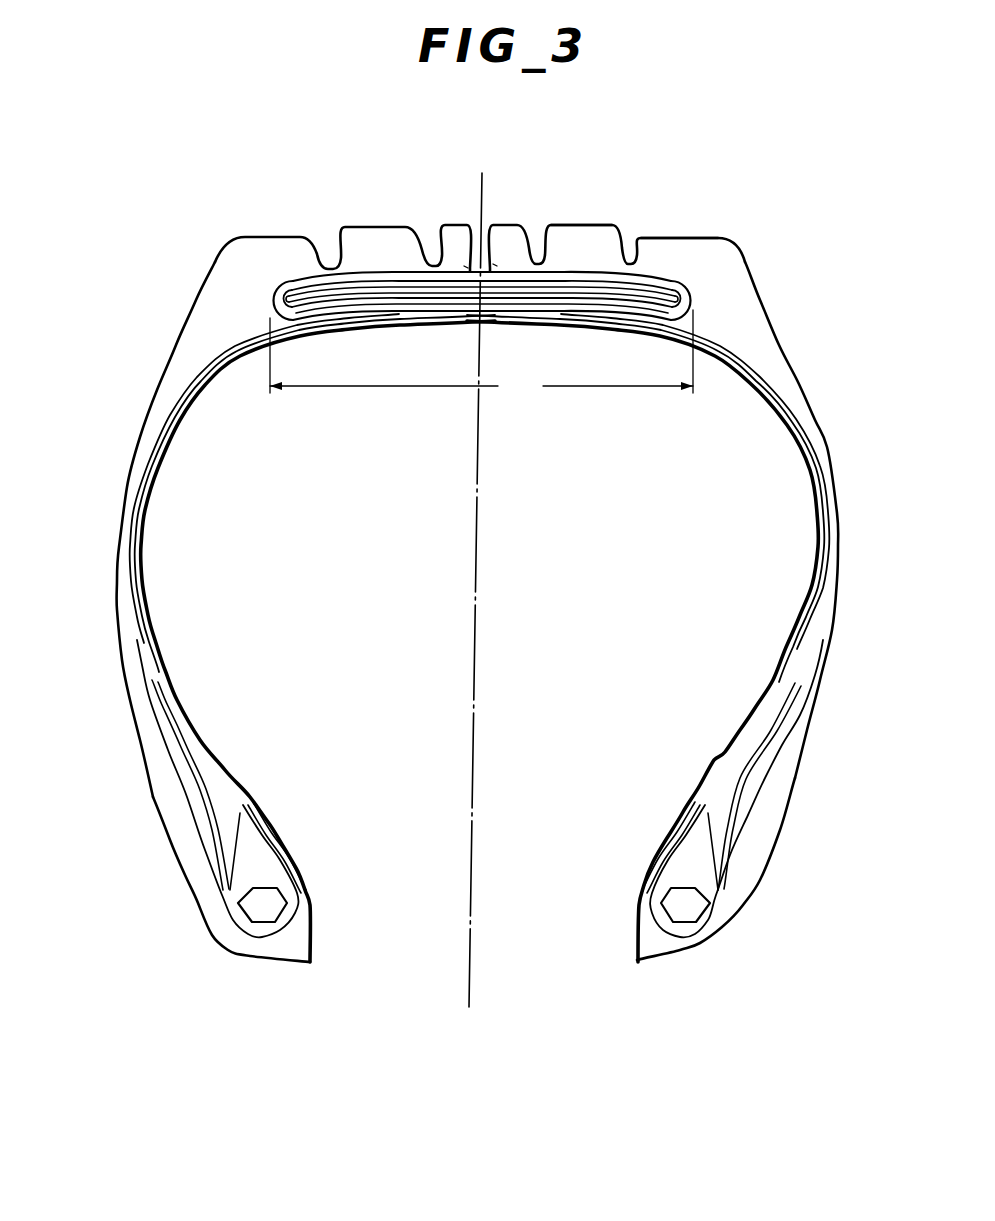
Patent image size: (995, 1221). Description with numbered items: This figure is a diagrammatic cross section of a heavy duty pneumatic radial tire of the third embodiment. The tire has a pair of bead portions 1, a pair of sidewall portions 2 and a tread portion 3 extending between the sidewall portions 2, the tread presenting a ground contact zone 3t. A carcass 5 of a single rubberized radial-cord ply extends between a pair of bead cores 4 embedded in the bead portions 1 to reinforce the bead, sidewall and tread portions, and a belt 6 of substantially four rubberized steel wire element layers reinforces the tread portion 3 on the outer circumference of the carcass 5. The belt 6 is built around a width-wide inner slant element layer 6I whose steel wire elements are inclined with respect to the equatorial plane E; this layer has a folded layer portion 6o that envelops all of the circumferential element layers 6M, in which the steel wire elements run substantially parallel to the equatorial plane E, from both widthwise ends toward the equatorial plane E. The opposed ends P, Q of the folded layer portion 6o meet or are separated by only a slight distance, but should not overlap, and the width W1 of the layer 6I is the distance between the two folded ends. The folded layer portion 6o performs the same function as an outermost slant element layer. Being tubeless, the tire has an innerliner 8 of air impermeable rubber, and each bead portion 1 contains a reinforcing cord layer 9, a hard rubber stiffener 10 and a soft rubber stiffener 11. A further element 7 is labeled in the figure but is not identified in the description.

The bead portion 1 is at (196, 905).
The sidewall portion 2 is at (116, 516).
The tread portion 3 is at (370, 222).
The ground contact zone 3t is at (572, 224).
The bead core 4 is at (262, 912).
The carcass 5 is at (136, 556).
The belt 6 is at (397, 262).
The folded layer portion 6o is at (293, 283).
The circumferential element layer 6M is at (287, 302).
The width-wide inner slant element layer 6I is at (371, 310).
The shoulder block 7 is at (661, 243).
The innerliner 8 is at (176, 702).
The reinforcing cord layer 9 is at (253, 822).
The hard rubber stiffener 10 is at (262, 873).
The soft rubber stiffener 11 is at (208, 797).
The opposed end of the folded layer portion P is at (466, 266).
The opposed end of the folded layer portion Q is at (495, 264).
The equatorial plane E is at (483, 200).
The width of the width-wide inner slant element layer W1 is at (481, 354).